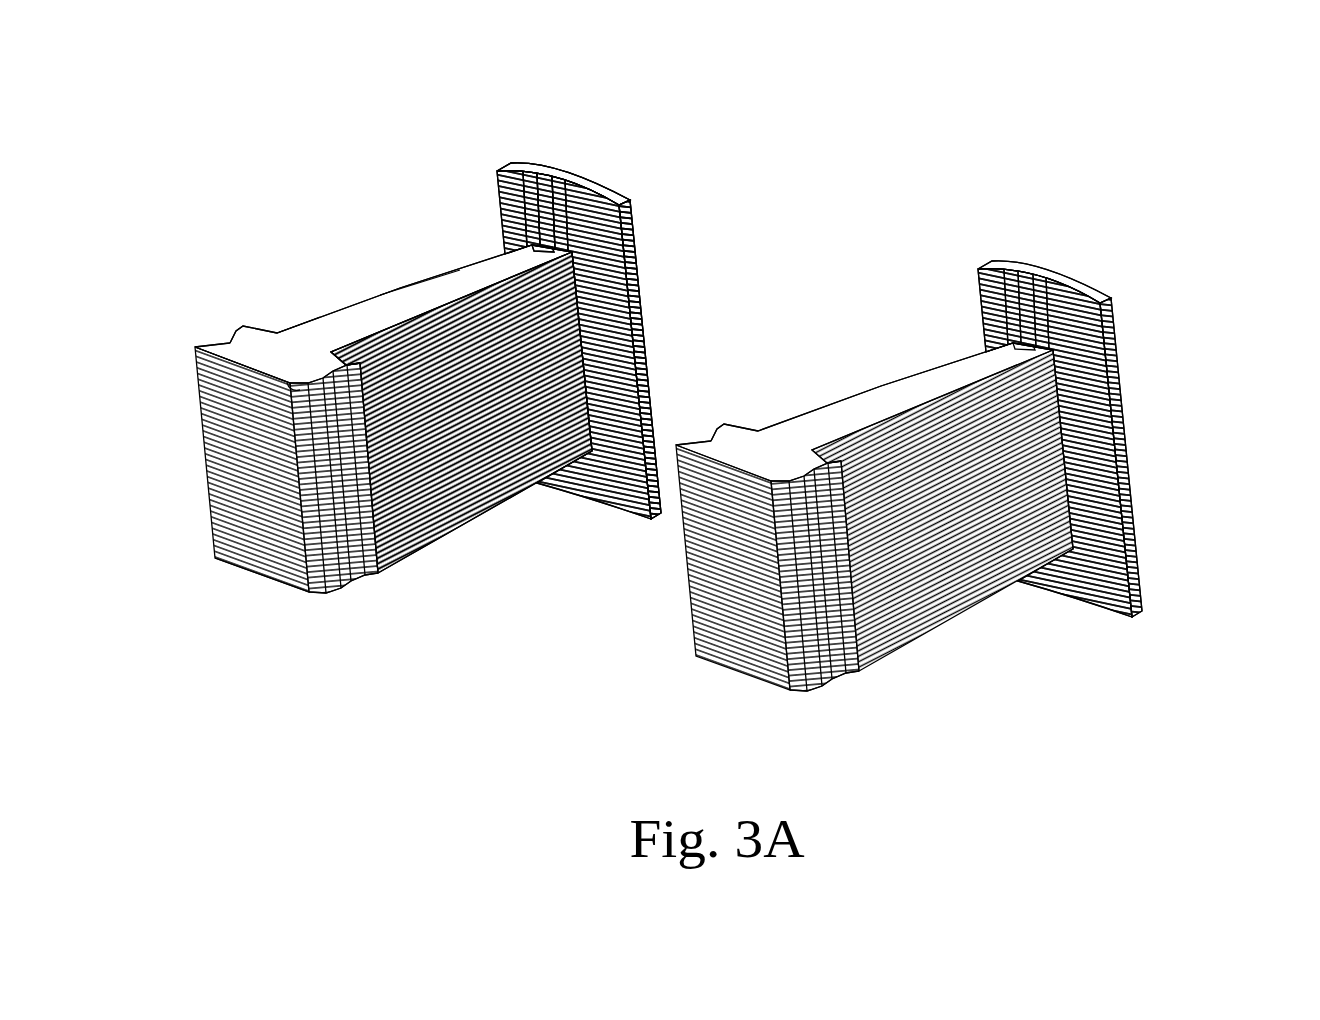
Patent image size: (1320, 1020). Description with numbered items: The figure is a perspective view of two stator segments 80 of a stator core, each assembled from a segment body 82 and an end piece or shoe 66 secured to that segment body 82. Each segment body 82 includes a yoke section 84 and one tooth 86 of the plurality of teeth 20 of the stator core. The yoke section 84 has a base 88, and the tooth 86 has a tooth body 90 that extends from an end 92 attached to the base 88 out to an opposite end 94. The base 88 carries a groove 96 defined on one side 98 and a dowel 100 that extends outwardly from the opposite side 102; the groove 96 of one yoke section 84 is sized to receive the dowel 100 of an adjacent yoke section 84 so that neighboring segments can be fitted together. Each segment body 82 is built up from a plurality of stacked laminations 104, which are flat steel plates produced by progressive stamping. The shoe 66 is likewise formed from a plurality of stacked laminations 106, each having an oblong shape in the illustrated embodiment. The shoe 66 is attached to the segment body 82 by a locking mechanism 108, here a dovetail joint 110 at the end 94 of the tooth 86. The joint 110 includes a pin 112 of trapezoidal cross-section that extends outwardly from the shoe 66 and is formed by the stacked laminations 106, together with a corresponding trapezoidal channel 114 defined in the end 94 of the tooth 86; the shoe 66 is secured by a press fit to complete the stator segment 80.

The teeth 20 is at (282, 185).
The shoe 66 is at (603, 188).
The stator segment 80 is at (704, 113).
The segment body 82 is at (484, 540).
The yoke section 84 is at (251, 329).
The tooth 86 is at (376, 298).
The base 88 is at (284, 341).
The tooth body 90 is at (421, 288).
The end 92 is at (312, 354).
The end 94 is at (602, 250).
The groove 96 is at (213, 331).
The side 98 is at (193, 349).
The dowel 100 is at (372, 582).
The opposite side 102 is at (292, 387).
The laminations 104 is at (278, 584).
The laminations 106 is at (634, 212).
The locking mechanism 108 is at (515, 148).
The dovetail joint 110 is at (524, 241).
The pin 112 is at (541, 246).
The channel 114 is at (531, 247).